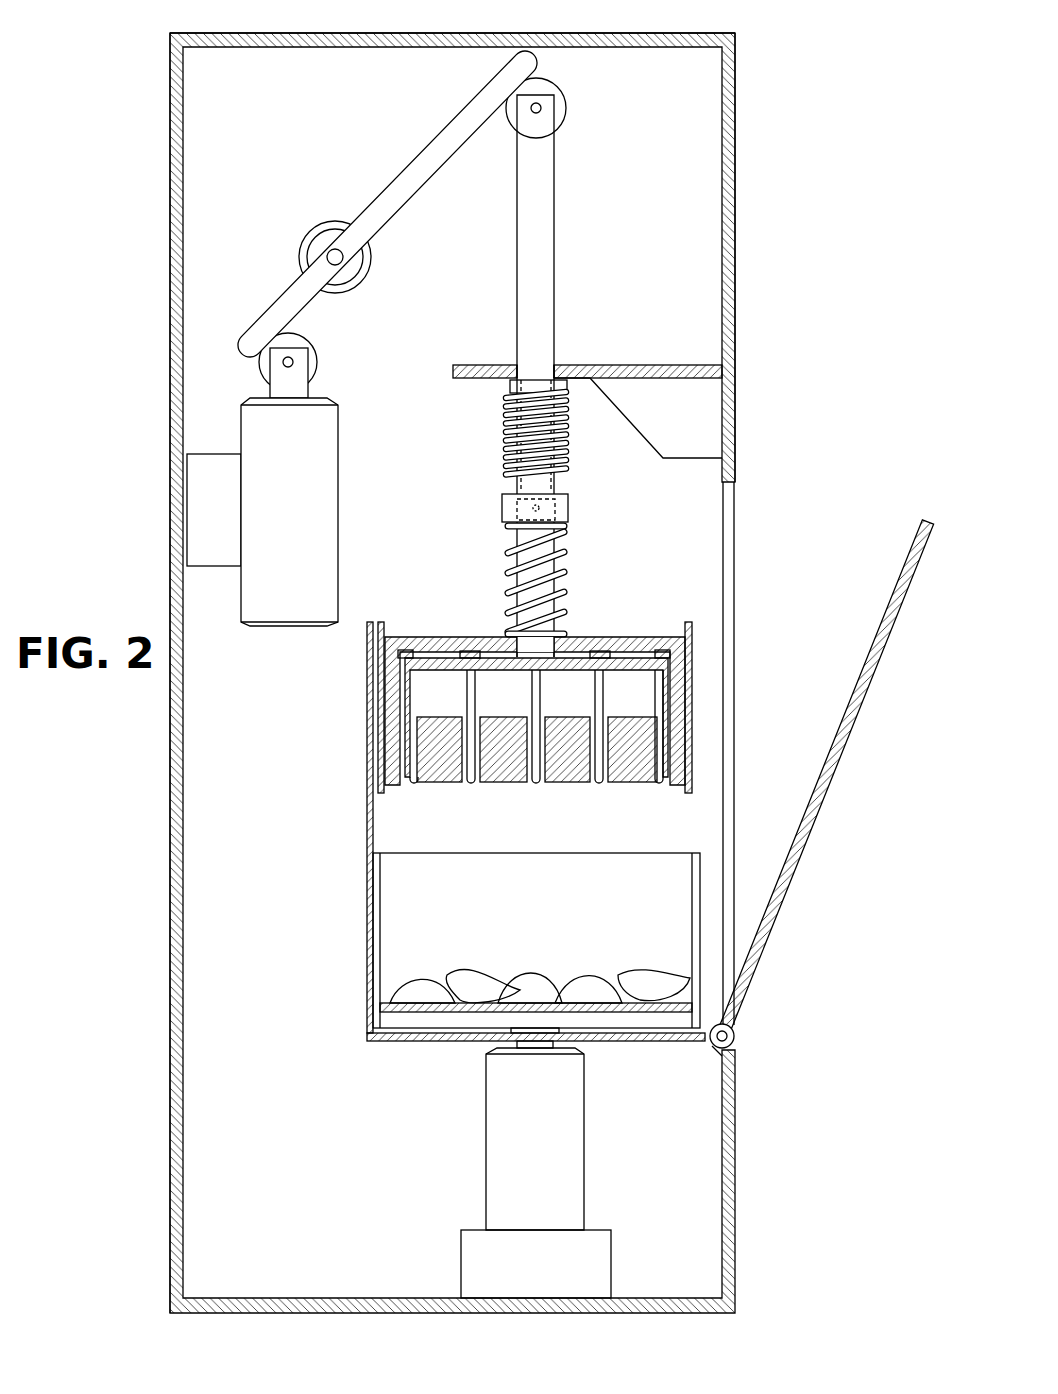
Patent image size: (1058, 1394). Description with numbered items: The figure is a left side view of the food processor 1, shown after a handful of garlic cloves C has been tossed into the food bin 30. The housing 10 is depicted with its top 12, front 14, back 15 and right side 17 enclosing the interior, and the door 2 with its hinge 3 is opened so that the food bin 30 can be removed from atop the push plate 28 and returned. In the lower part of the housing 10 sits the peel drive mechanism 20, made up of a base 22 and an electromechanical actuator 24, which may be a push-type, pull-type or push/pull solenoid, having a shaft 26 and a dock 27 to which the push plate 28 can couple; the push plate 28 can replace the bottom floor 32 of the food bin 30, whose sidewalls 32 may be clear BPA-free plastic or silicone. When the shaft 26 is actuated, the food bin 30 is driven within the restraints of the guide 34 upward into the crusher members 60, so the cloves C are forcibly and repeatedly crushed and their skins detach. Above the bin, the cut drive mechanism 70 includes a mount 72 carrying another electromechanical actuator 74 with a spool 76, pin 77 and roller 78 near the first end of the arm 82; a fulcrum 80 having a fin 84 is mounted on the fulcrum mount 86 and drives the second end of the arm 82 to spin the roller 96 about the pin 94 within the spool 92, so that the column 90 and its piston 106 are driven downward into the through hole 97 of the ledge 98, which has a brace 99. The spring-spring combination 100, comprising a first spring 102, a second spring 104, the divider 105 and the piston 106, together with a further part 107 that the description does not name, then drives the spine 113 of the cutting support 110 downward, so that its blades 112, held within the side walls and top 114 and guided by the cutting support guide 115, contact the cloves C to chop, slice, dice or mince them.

The food processor 1 is at (155, 104).
The door 2 is at (918, 528).
The hinge 3 is at (735, 1036).
The housing 10 is at (700, 34).
The top 12 is at (345, 34).
The front 14 is at (737, 240).
The back 15 is at (172, 242).
The right side 17 is at (451, 250).
The peel drive mechanism 20 is at (494, 1163).
The base 22 is at (523, 1271).
The electromechanical actuator 24 is at (523, 1156).
The shaft 26 is at (531, 1033).
The dock 27 is at (537, 1033).
The push plate 28 is at (390, 1022).
The food bin 30 is at (536, 940).
The sidewalls 32 is at (383, 908).
The guide 34 is at (367, 824).
The crusher members 60 is at (427, 762).
The cut drive mechanism 70 is at (387, 204).
The mount 72 is at (201, 520).
The electromechanical actuator 74 is at (276, 520).
The spool 76 is at (262, 376).
The pin 77 is at (295, 362).
The roller 78 is at (310, 333).
The fulcrum 80 is at (330, 252).
The arm 82 is at (440, 178).
The fin 84 is at (420, 140).
The fulcrum mount 86 is at (372, 275).
The column 90 is at (555, 232).
The spool 92 is at (542, 108).
The pin 94 is at (542, 118).
The roller 96 is at (556, 85).
The through hole 97 is at (545, 375).
The ledge 98 is at (612, 364).
The brace 99 is at (662, 428).
The spring-spring combination 100 is at (531, 507).
The first spring 102 is at (505, 430).
The second spring 104 is at (505, 548).
The divider 105 is at (502, 508).
The piston 106 is at (510, 586).
The retainer 107 is at (510, 386).
The cutting support 110 is at (535, 722).
The blades 112 is at (408, 786).
The spine 113 is at (440, 672).
The side walls and top 114 is at (620, 637).
The cutting support guide 115 is at (380, 622).
The garlic cloves C is at (482, 978).